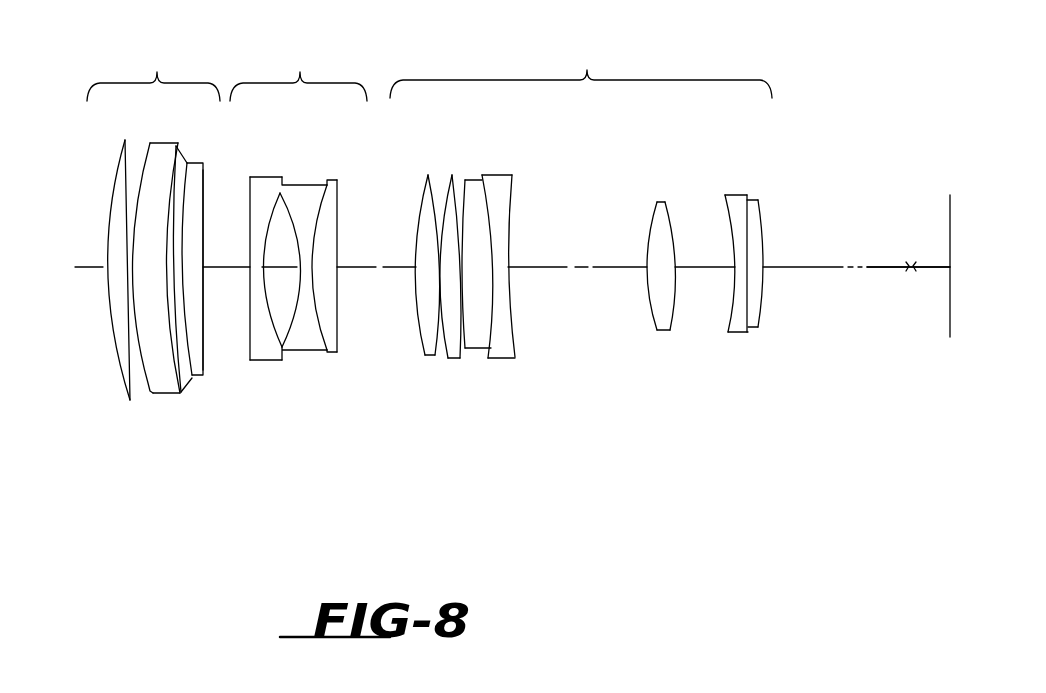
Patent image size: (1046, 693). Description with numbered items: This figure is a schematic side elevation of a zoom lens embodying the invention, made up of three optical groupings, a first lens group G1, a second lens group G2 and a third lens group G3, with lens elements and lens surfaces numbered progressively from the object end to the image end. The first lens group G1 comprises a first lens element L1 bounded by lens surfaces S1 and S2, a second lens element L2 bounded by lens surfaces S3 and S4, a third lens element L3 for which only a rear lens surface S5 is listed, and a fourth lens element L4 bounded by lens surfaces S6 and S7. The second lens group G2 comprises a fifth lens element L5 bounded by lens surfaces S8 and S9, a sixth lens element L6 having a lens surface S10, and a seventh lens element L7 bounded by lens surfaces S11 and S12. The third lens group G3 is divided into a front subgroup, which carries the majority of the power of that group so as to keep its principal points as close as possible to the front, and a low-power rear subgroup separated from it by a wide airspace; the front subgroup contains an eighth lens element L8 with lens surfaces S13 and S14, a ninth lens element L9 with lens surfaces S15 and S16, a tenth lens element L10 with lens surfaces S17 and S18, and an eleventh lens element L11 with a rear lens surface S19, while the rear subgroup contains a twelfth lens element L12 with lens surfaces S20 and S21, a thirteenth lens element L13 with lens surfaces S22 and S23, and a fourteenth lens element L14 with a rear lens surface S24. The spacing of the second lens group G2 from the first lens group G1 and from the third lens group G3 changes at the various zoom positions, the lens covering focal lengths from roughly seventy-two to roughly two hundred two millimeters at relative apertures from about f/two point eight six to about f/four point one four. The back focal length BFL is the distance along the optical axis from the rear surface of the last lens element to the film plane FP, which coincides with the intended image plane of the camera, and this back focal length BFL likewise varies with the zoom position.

The first lens group G1 is at (153, 72).
The second lens group G2 is at (298, 72).
The third lens group G3 is at (581, 69).
The first lens element L1 is at (89, 284).
The second lens element L2 is at (135, 289).
The third lens element L3 is at (200, 303).
The fourth lens element L4 is at (216, 256).
The fifth lens element L5 is at (285, 293).
The sixth lens element L6 is at (328, 265).
The seventh lens element L7 is at (357, 248).
The eighth lens element L8 is at (436, 279).
The ninth lens element L9 is at (497, 272).
The tenth lens element L10 is at (527, 251).
The eleventh lens element L11 is at (538, 264).
The twelfth lens element L12 is at (687, 265).
The thirteenth lens element L13 is at (776, 260).
The fourteenth lens element L14 is at (792, 251).
The lens surface S1 is at (110, 350).
The lens surface S2 is at (128, 372).
The lens surface S3 is at (140, 382).
The lens surface S4 is at (157, 397).
The lens surface S5 is at (188, 382).
The lens surface S6 is at (202, 372).
The lens surface S7 is at (203, 330).
The lens surface S8 is at (252, 360).
The lens surface S9 is at (268, 342).
The lens surface S10 is at (297, 315).
The lens surface S11 is at (317, 308).
The lens surface S12 is at (338, 285).
The lens surface S13 is at (425, 356).
The lens surface S14 is at (436, 358).
The lens surface S15 is at (445, 358).
The lens surface S16 is at (462, 350).
The lens surface S17 is at (490, 323).
The lens surface S18 is at (497, 310).
The lens surface S19 is at (510, 283).
The lens surface S20 is at (655, 322).
The lens surface S21 is at (670, 323).
The lens surface S22 is at (740, 332).
The lens surface S23 is at (750, 312).
The lens surface S24 is at (765, 287).
The film plane FP is at (948, 212).
The back focal length BFL is at (900, 251).